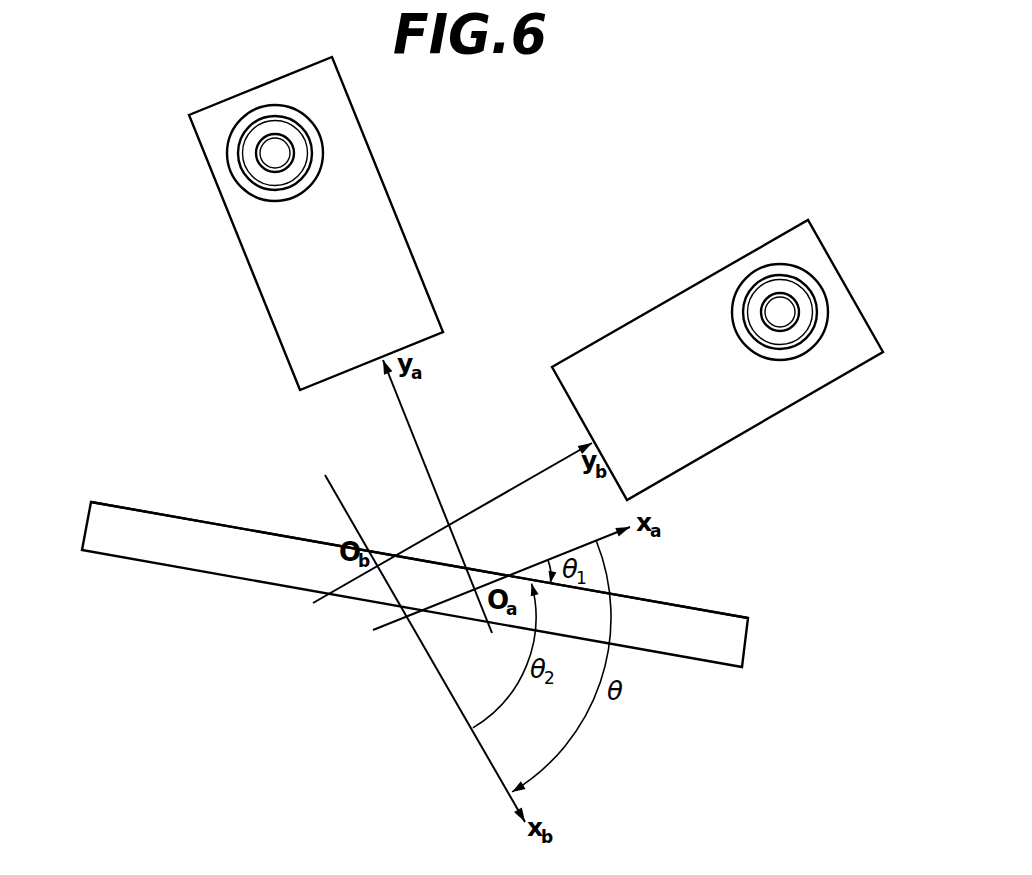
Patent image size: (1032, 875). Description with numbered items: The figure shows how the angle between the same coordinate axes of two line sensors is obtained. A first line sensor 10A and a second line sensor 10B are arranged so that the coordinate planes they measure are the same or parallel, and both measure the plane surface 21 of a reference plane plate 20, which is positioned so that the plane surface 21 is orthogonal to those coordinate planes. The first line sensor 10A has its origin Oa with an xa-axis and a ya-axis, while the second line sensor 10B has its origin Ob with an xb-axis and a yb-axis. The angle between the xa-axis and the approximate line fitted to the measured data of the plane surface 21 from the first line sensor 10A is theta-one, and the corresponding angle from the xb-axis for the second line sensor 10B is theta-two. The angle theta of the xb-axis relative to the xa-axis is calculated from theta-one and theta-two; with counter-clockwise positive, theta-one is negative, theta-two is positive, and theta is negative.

The first line sensor 10A is at (360, 127).
The second line sensor 10B is at (832, 257).
The reference plane plate 20 is at (70, 501).
The plane surface 21 is at (202, 523).